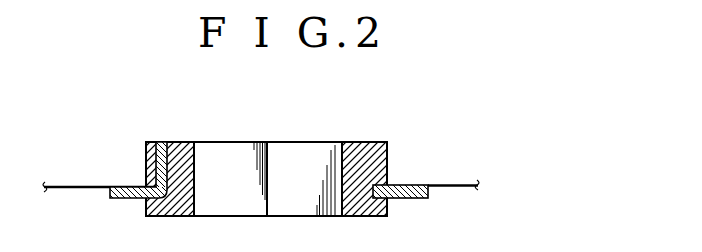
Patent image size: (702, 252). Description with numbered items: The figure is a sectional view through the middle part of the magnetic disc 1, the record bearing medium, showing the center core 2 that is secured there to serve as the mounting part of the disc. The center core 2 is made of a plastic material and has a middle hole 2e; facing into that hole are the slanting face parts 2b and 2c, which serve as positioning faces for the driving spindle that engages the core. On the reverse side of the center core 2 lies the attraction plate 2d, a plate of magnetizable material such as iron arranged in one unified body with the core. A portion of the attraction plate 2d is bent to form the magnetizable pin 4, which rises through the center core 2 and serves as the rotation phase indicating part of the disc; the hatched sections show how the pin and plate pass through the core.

The magnetic disc 1 is at (83, 185).
The center core 2 is at (361, 146).
The slanting face part 2b is at (232, 146).
The slanting face part 2c is at (305, 146).
The attraction plate 2d is at (405, 188).
The middle hole 2e is at (272, 135).
The magnetizable pin 4 is at (169, 152).